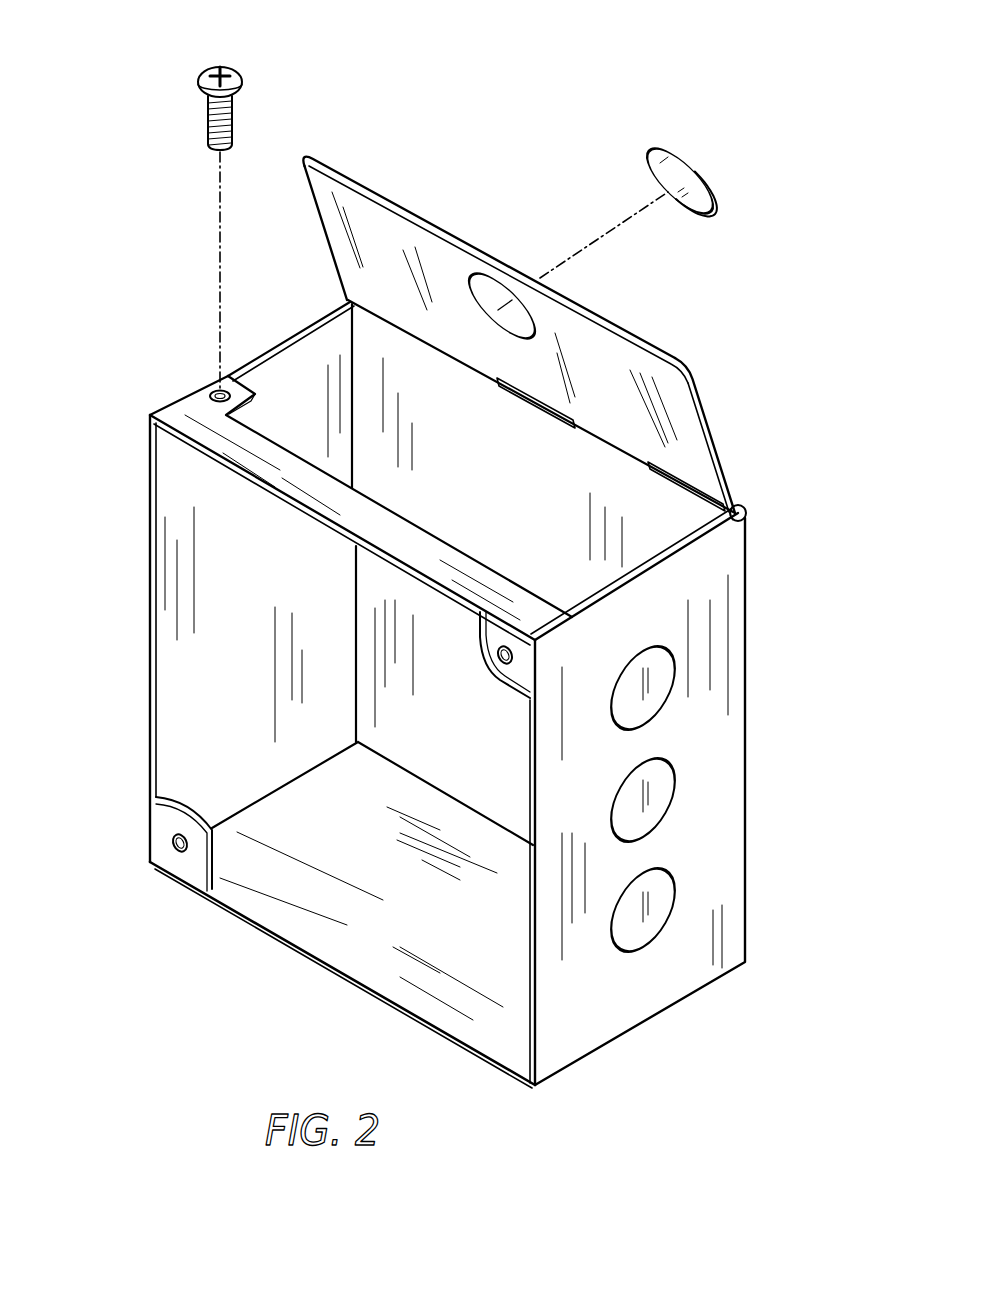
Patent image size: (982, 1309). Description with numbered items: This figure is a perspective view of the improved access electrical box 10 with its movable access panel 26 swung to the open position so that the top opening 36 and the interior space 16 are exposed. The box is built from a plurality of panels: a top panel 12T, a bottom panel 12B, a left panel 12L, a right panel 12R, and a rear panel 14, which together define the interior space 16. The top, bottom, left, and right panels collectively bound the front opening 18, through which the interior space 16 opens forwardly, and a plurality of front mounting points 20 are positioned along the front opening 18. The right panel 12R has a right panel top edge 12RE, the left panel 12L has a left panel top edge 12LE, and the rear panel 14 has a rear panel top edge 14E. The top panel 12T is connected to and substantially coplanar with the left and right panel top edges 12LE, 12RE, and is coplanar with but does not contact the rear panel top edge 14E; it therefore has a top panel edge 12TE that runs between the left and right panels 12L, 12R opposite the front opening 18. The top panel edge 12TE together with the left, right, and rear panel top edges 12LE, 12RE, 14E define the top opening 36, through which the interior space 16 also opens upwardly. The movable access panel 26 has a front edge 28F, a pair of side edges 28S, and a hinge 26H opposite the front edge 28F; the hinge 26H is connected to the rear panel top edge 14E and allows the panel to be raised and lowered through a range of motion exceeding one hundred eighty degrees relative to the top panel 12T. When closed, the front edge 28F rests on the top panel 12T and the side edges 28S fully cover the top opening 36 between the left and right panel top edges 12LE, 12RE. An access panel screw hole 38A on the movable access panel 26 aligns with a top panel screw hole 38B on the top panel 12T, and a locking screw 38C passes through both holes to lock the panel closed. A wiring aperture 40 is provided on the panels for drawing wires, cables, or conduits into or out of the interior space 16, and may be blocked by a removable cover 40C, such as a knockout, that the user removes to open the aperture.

The improved access electrical box 10 is at (441, 698).
The left panel 12L is at (208, 569).
The top panel 12T is at (315, 510).
The top panel edge 12TE is at (262, 437).
The left panel top edge 12LE is at (252, 346).
The right panel top edge 12RE is at (668, 562).
The right panel 12R is at (677, 814).
The bottom panel 12B is at (342, 975).
The rear panel 14 is at (504, 509).
The rear panel top edge 14E is at (717, 526).
The interior space 16 is at (177, 713).
The front opening 18 is at (150, 668).
The front mounting points 20 is at (503, 668).
The movable access panel 26 is at (519, 303).
The hinge 26H is at (748, 506).
The side edges 28S is at (325, 231).
The front edge 28F is at (598, 311).
The top opening 36 is at (289, 342).
The access panel screw hole 38A is at (311, 152).
The top panel screw hole 38B is at (218, 388).
The locking screw 38C is at (227, 66).
The wiring aperture 40 is at (667, 706).
The removable cover 40C is at (714, 190).